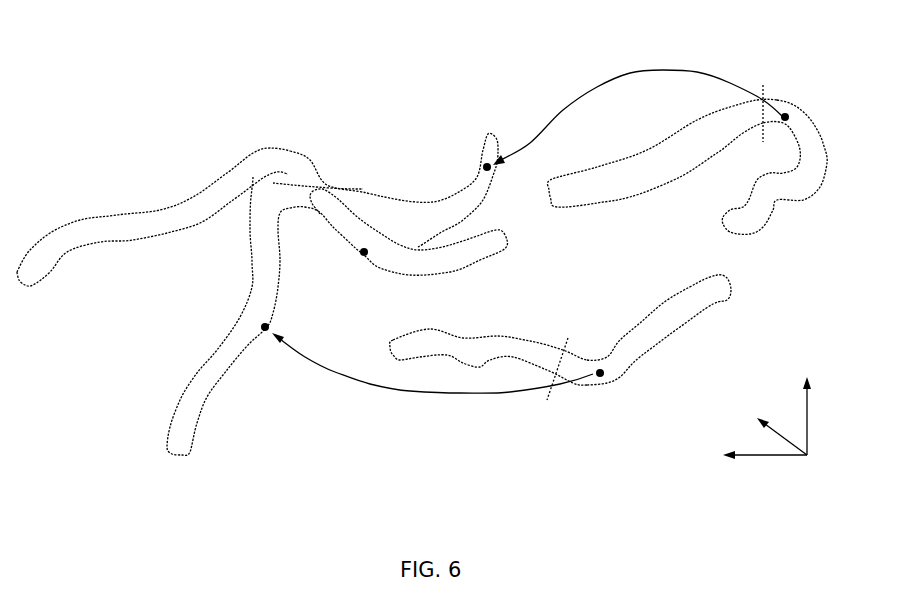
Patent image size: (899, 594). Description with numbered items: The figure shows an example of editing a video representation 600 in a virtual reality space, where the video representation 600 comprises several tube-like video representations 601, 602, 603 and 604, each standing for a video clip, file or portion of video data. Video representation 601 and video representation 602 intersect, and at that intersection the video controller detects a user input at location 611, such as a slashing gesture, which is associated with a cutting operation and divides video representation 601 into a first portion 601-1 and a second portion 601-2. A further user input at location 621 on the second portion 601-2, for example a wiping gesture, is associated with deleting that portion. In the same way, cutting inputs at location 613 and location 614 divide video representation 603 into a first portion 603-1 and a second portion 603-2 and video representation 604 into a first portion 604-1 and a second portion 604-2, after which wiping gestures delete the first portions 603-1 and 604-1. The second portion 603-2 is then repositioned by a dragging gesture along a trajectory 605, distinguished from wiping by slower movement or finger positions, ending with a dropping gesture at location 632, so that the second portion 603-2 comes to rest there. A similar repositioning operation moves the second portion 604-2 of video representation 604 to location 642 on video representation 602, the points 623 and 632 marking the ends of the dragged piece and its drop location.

The video representation 600 is at (223, 88).
The video representation 601 is at (314, 207).
The first portion 601-1 is at (117, 215).
The second portion 601-2 is at (510, 235).
The video representation 602 is at (210, 350).
The video representation 603 is at (709, 156).
The first portion 603-1 is at (593, 172).
The second portion 603-2 is at (813, 197).
The video representation 604 is at (560, 357).
The first portion 604-1 is at (477, 342).
The second portion 604-2 is at (653, 345).
The trajectory 605 is at (657, 70).
The location 611 is at (327, 185).
The location 613 is at (763, 118).
The location 614 is at (567, 357).
The location 621 is at (364, 254).
The connection point on third tube 623 is at (787, 117).
The location 632 is at (484, 167).
The location 642 is at (267, 326).